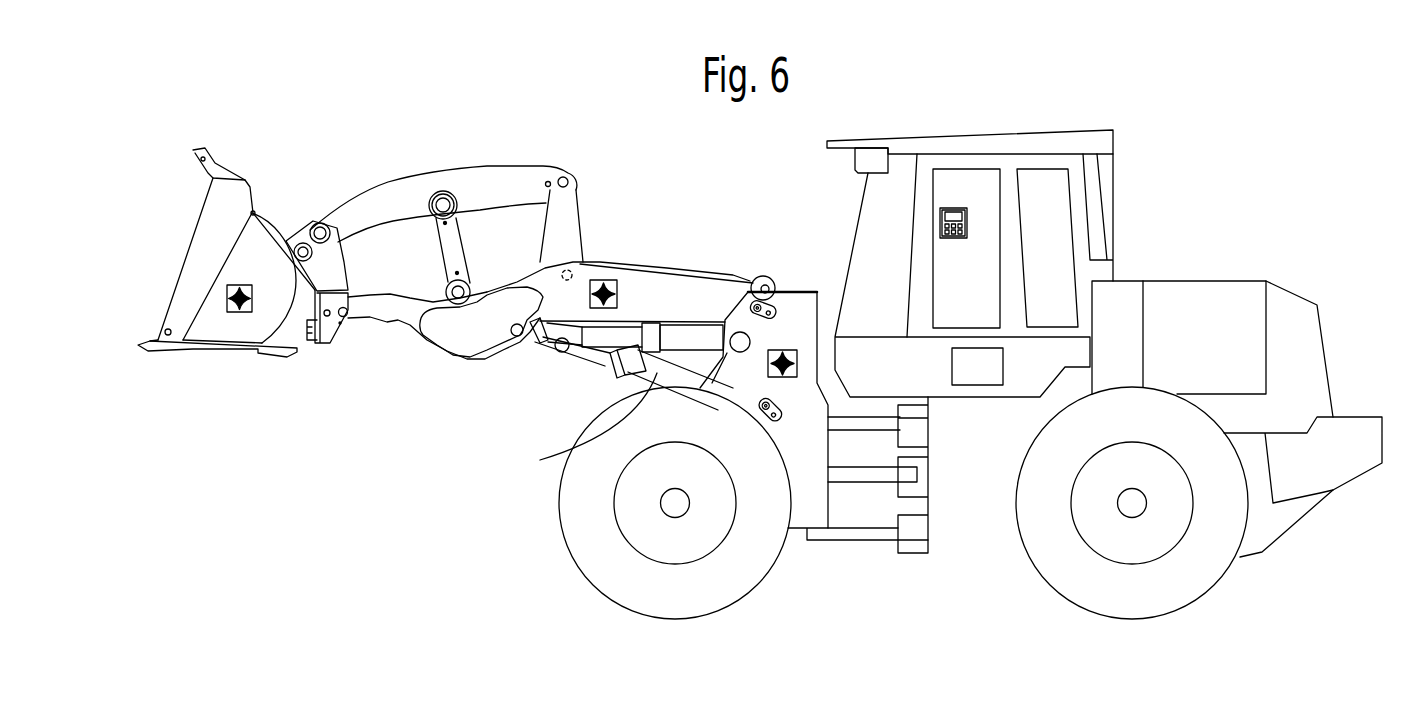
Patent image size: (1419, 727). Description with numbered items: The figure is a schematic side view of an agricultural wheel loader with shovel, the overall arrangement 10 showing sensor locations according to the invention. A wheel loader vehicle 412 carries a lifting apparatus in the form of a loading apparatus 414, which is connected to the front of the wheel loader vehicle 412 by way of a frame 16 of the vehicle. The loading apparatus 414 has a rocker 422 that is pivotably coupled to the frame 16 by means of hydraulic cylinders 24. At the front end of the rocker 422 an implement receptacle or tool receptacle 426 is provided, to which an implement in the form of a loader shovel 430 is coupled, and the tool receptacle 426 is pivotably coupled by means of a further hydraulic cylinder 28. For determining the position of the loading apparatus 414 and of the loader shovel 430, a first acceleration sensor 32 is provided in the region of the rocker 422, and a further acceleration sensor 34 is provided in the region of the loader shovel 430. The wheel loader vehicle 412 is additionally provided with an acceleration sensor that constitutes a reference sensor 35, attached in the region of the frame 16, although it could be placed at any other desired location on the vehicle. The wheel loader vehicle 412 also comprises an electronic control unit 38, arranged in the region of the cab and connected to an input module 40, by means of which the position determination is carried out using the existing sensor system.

The work machine (wheel loader) 10 is at (621, 95).
The loading apparatus 414 is at (548, 283).
The tool receptacle 426 is at (320, 268).
The loader shovel 430 is at (220, 238).
The acceleration sensor 34 is at (230, 308).
The rocker 422 is at (398, 320).
The first acceleration sensor 32 is at (607, 288).
The further hydraulic cylinder 28 is at (690, 335).
The reference sensor 35 is at (787, 357).
The hydraulic cylinders 24 is at (573, 448).
The frame 16 is at (805, 475).
The electronic control unit 38 is at (978, 380).
The input module 40 is at (955, 218).
The wheel loader vehicle 412 is at (1198, 302).